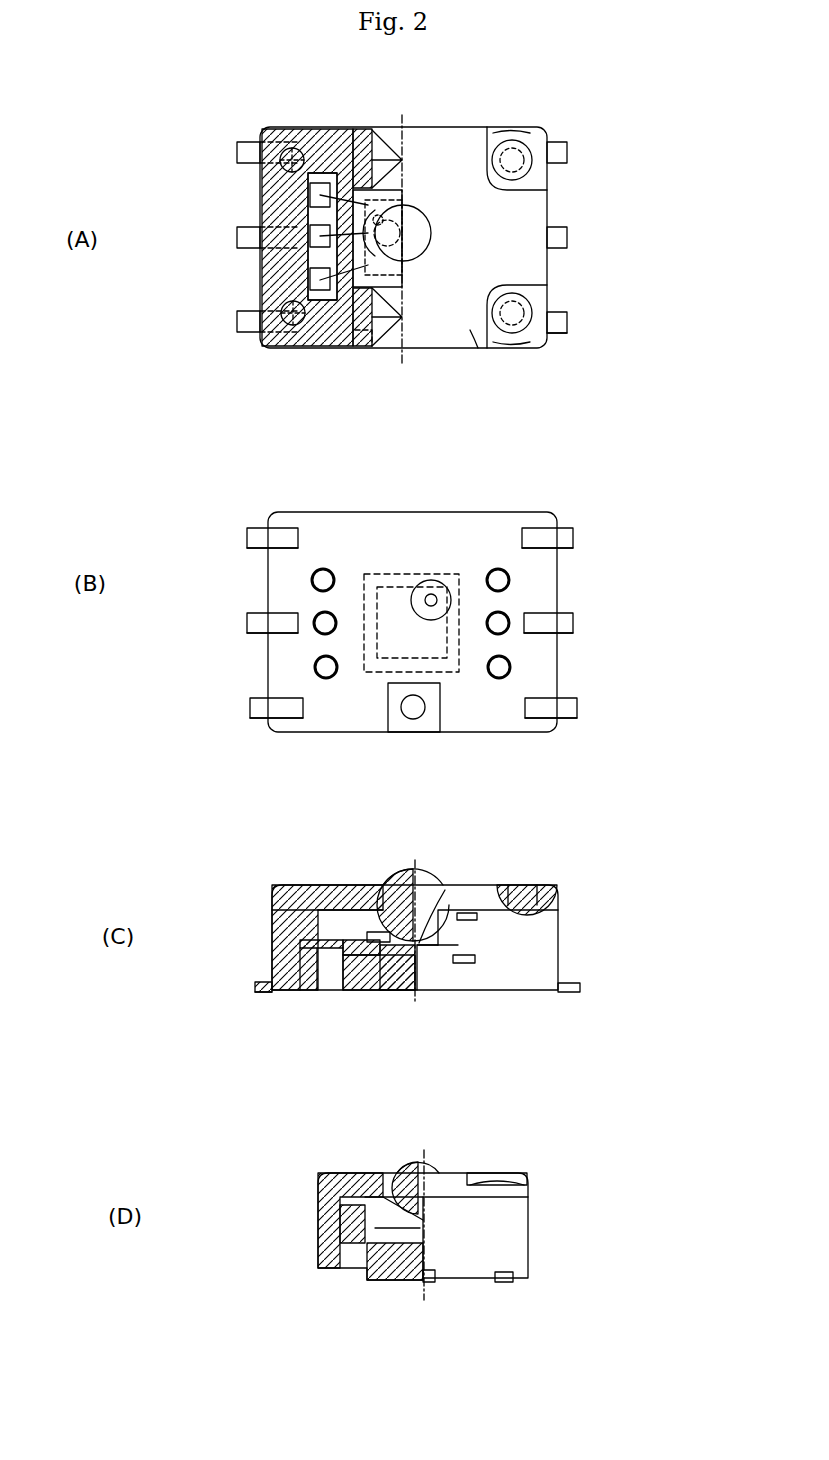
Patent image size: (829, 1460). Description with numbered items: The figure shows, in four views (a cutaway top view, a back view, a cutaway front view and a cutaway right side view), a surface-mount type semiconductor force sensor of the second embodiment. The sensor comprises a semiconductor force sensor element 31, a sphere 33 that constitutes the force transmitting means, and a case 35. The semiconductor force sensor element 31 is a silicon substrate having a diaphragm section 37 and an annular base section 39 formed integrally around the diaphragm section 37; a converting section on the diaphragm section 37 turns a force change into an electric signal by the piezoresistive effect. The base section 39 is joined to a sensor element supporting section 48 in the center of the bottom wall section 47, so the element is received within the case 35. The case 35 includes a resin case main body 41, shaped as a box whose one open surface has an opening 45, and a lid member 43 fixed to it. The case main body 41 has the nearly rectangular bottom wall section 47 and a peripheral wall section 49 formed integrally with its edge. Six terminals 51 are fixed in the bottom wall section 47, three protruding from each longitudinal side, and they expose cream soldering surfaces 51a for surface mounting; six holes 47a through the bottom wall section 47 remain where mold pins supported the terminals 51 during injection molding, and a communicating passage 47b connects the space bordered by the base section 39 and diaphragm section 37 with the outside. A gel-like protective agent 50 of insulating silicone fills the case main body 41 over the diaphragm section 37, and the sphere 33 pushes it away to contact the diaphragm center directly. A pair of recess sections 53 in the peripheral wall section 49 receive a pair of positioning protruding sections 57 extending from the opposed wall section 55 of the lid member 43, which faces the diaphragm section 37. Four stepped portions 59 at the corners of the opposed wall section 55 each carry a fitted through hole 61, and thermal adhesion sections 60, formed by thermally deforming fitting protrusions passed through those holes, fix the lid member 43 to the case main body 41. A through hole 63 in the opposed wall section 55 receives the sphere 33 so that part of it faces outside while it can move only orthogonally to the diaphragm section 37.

The semiconductor force sensor element 31 is at (383, 295).
The sphere 33 is at (395, 190).
The case 35 is at (517, 220).
The diaphragm section 37 is at (378, 320).
The base section 39 is at (390, 200).
The case main body 41 is at (322, 330).
The lid member 43 is at (470, 330).
The opening 45 is at (342, 887).
The bottom wall section 47 is at (540, 578).
The holes 47a is at (500, 572).
The communicating passage 47b is at (433, 596).
The sensor element supporting section 48 is at (352, 975).
The peripheral wall section 49 is at (300, 962).
The gel-like protective agent 50 is at (305, 925).
The terminals 51 is at (237, 152).
The cream soldering surfaces 51a is at (562, 325).
The recess sections 53 is at (462, 965).
The opposed wall section 55 is at (433, 340).
The positioning protruding sections 57 is at (472, 955).
The stepped portions 59 is at (543, 142).
The thermal adhesion sections 60 is at (521, 142).
The fitted through holes 61 is at (526, 172).
The through hole 63 is at (422, 210).